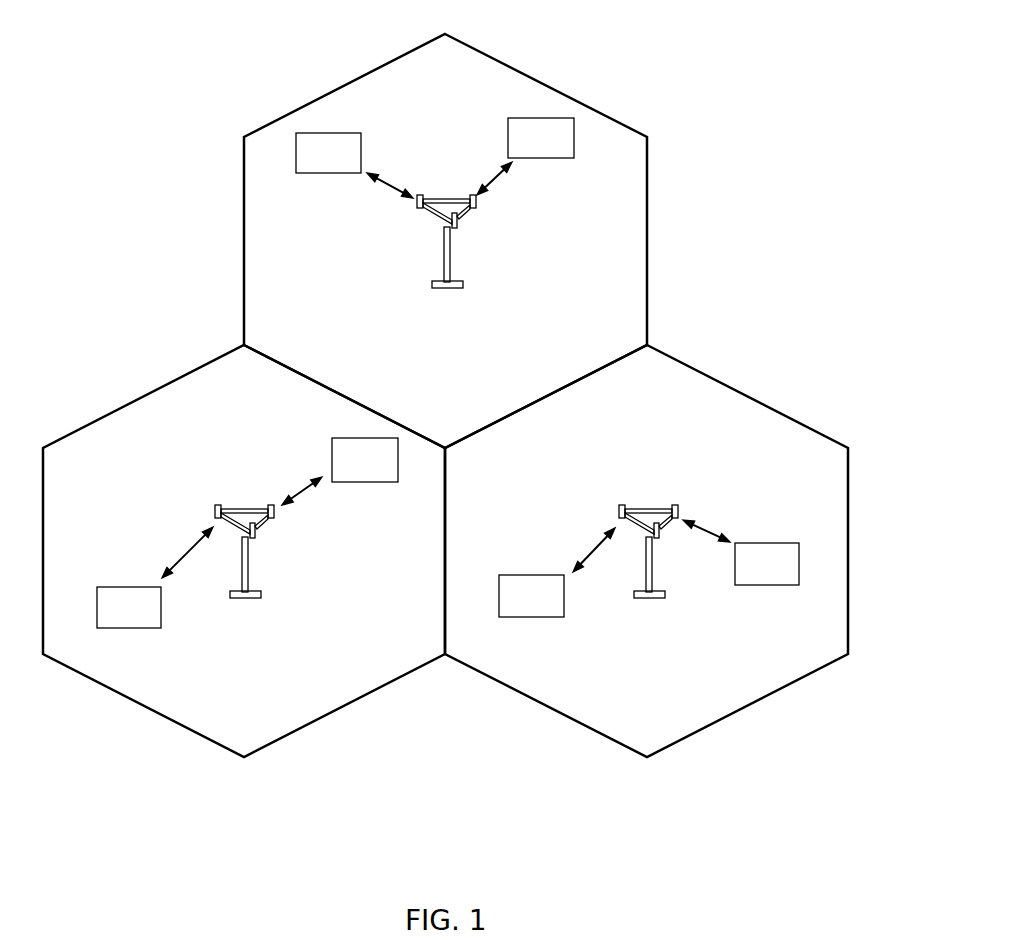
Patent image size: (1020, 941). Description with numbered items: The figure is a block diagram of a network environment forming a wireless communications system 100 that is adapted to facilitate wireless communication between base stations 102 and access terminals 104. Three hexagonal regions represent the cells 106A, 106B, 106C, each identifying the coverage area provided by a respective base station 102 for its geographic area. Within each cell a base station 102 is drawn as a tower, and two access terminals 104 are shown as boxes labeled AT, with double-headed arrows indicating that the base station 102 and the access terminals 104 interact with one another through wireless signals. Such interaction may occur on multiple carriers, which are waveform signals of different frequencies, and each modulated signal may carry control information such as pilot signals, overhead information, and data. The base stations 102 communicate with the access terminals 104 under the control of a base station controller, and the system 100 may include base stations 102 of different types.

The wireless communications system 100 is at (790, 74).
The base station 102 is at (448, 199).
The access terminal 104 is at (320, 173).
The cell 106A is at (120, 407).
The cell 106B is at (528, 75).
The cell 106C is at (745, 397).